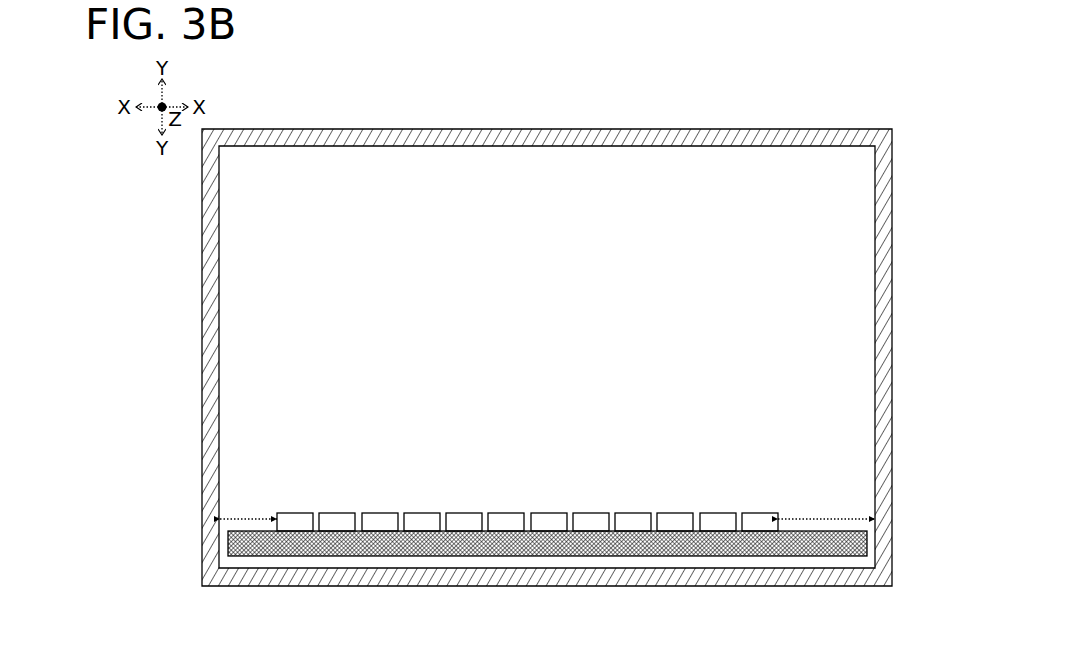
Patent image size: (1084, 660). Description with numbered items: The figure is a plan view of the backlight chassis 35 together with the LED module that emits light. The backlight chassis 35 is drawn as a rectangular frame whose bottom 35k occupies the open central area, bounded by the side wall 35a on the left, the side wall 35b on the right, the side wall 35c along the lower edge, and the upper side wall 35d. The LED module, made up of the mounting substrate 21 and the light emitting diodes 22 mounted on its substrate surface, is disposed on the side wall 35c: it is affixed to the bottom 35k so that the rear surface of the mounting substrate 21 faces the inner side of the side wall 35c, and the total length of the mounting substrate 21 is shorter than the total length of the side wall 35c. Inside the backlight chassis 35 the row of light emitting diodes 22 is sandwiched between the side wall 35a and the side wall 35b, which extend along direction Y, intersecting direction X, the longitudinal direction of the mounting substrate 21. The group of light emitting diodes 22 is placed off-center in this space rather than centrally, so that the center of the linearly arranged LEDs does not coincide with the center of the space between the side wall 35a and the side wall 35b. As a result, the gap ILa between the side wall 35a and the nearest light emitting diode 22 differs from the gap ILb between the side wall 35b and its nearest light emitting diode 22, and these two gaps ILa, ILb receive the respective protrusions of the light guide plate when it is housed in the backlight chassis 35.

The backlight chassis 35 is at (547, 353).
The side wall 35a is at (203, 329).
The side wall 35b is at (893, 321).
The side wall 35c is at (516, 587).
The top side wall of frame 35d is at (496, 129).
The bottom 35k is at (547, 357).
The mounting substrate 21 is at (547, 543).
The light emitting diodes 22 is at (746, 513).
The gap ILa is at (248, 499).
The gap ILb is at (826, 499).